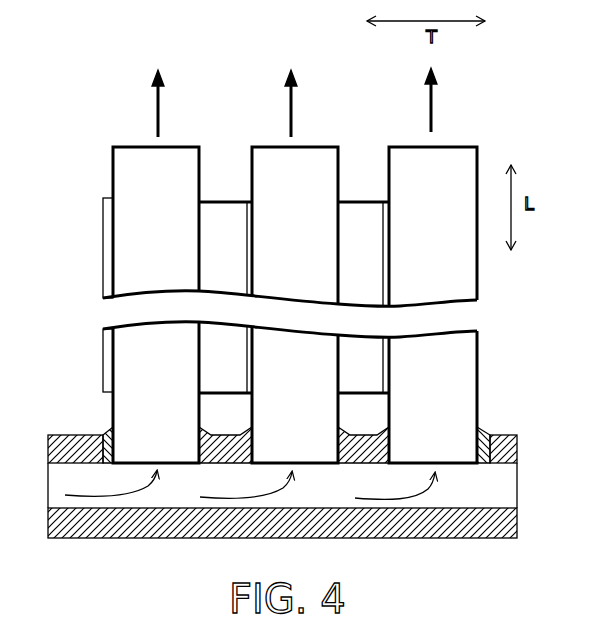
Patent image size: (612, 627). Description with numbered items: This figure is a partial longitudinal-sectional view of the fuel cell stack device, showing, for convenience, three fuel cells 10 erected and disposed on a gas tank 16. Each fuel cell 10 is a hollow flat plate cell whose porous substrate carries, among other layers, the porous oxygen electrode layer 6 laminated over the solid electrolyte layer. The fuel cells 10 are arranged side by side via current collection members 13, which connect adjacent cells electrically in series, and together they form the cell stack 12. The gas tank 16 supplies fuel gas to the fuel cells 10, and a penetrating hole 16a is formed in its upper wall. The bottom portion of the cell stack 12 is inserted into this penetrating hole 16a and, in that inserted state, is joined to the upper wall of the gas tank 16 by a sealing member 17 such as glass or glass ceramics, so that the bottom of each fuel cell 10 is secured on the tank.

The fuel cell 10 is at (123, 156).
The cell stack 12 is at (474, 141).
The current collection member 13 is at (210, 241).
The oxygen electrode layer 6 is at (245, 202).
The sealing member 17 is at (109, 432).
The penetrating hole 16a is at (483, 433).
The gas tank 16 is at (504, 446).